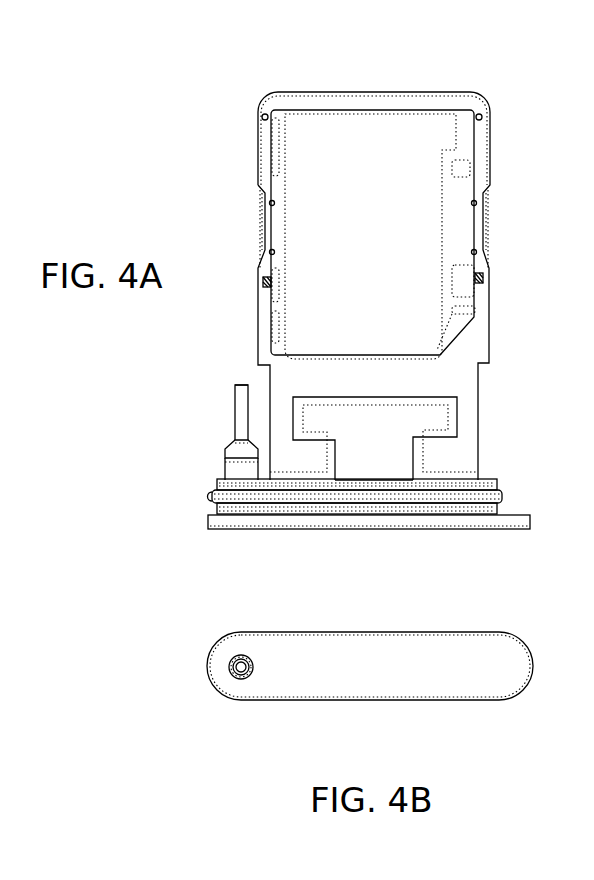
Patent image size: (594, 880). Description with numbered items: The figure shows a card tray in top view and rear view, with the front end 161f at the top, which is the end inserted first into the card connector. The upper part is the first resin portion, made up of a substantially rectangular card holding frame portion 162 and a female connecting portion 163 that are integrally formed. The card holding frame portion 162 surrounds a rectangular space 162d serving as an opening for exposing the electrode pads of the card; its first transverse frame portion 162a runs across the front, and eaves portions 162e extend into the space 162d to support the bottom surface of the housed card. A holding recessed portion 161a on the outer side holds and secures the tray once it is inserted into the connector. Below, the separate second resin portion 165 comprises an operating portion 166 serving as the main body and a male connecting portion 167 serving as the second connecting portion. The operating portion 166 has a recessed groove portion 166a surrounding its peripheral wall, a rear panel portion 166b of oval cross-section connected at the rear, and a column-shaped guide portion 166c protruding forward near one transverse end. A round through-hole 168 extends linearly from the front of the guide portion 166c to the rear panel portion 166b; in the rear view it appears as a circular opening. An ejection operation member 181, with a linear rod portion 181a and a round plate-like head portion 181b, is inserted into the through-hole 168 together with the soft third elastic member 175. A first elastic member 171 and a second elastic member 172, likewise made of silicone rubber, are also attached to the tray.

In FIG. 4A, the front end 161f is at (413, 90).
In FIG. 4A, the holding recessed portion 161a is at (488, 208).
In FIG. 4A, the first transverse frame portion 162a is at (327, 95).
In FIG. 4A, the space 162d is at (297, 217).
In FIG. 4A, the eaves portion 162e is at (482, 232).
In FIG. 4A, the card holding frame portion 162 is at (492, 316).
In FIG. 4A, the second elastic member 172 is at (452, 412).
In FIG. 4A, the female connecting portion 163 is at (470, 446).
In FIG. 4A, the ejection operation member 181 is at (235, 412).
In FIG. 4A, the rod portion 181a is at (234, 389).
In FIG. 4B, the head portion 181b is at (233, 678).
In FIG. 4A, the third elastic member 175 is at (225, 449).
In FIG. 4A, the guide portion 166c is at (224, 470).
In FIG. 4A, the operating portion 166 is at (498, 484).
In FIG. 4A, the recessed groove portion 166a is at (500, 497).
In FIG. 4A, the rear panel portion 166b is at (468, 528).
In FIG. 4B, the rear panel portion 166b is at (425, 688).
In FIG. 4A, the second resin portion 165 is at (531, 521).
In FIG. 4B, the second resin portion 165 is at (500, 632).
In FIG. 4A, the male connecting portion 167 is at (372, 408).
In FIG. 4B, the through-hole 168 is at (252, 676).
In FIG. 4A, the first elastic member 171 is at (212, 496).